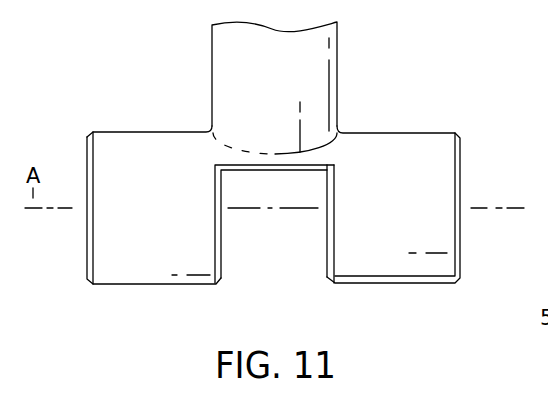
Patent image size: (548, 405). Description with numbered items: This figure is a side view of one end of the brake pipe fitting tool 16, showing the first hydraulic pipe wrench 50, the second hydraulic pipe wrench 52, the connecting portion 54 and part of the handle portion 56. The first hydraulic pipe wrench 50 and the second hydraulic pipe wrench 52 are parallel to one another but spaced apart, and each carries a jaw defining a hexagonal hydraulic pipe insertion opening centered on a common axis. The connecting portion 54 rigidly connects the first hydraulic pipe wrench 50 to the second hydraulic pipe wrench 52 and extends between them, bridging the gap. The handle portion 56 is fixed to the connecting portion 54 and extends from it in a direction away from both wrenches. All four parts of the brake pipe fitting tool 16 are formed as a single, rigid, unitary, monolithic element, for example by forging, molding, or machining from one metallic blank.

The brake pipe fitting tool 16 is at (273, 174).
The first hydraulic pipe wrench 50 is at (147, 250).
The second hydraulic pipe wrench 52 is at (387, 250).
The connecting portion 54 is at (287, 153).
The handle portion 56 is at (245, 75).